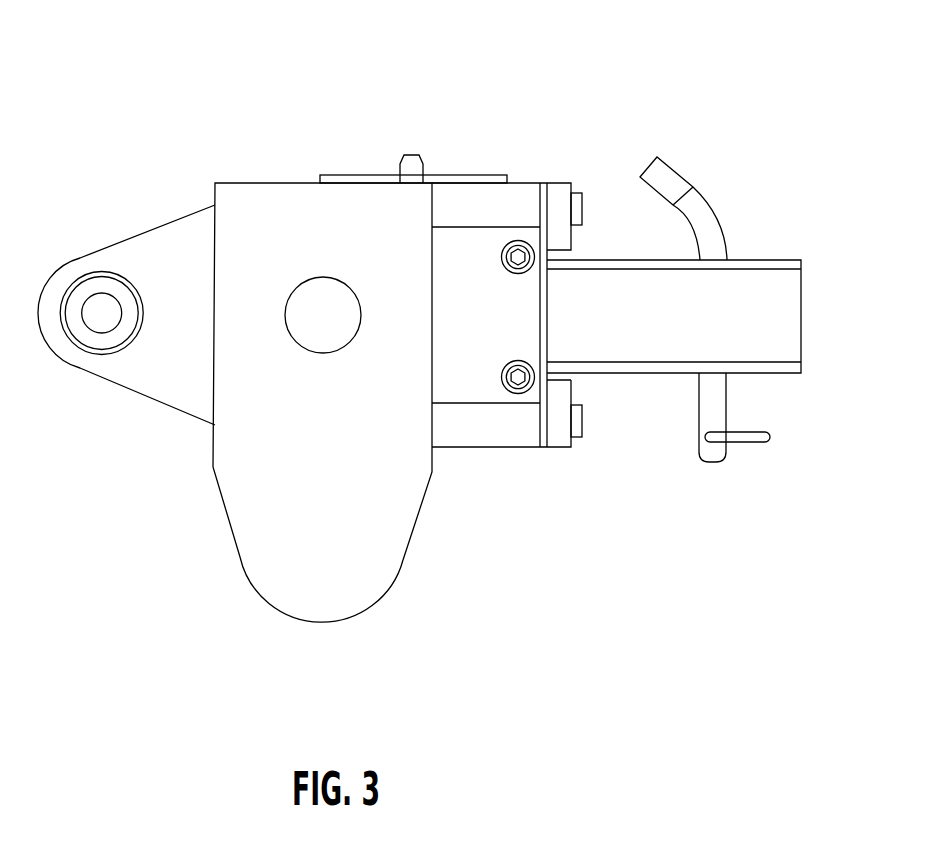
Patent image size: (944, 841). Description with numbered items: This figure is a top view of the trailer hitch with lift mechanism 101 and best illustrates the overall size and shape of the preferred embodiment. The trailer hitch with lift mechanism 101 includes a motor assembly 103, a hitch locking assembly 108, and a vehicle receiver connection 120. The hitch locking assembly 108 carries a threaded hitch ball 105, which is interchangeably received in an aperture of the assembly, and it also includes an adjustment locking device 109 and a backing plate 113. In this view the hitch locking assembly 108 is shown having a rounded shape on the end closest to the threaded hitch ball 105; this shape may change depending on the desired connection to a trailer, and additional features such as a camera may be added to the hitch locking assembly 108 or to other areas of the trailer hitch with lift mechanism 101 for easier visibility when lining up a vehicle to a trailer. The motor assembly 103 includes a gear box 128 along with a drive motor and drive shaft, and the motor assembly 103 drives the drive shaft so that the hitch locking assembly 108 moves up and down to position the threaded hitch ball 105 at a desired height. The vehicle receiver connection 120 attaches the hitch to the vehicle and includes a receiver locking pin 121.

The trailer hitch with lift mechanism 101 is at (502, 46).
The motor assembly 103 is at (327, 632).
The threaded hitch ball 105 is at (92, 340).
The hitch locking assembly 108 is at (197, 420).
The adjustment locking device 109 is at (413, 153).
The backing plate 113 is at (557, 190).
The vehicle receiver connection 120 is at (782, 312).
The receiver locking pin 121 is at (700, 422).
The gear box 128 is at (403, 560).